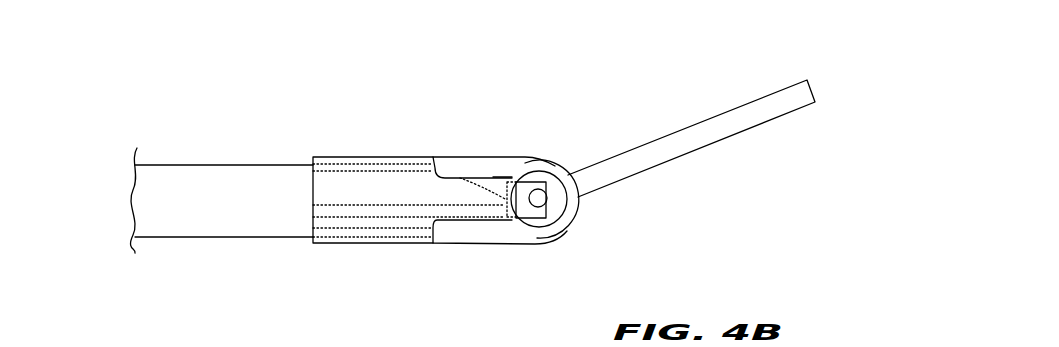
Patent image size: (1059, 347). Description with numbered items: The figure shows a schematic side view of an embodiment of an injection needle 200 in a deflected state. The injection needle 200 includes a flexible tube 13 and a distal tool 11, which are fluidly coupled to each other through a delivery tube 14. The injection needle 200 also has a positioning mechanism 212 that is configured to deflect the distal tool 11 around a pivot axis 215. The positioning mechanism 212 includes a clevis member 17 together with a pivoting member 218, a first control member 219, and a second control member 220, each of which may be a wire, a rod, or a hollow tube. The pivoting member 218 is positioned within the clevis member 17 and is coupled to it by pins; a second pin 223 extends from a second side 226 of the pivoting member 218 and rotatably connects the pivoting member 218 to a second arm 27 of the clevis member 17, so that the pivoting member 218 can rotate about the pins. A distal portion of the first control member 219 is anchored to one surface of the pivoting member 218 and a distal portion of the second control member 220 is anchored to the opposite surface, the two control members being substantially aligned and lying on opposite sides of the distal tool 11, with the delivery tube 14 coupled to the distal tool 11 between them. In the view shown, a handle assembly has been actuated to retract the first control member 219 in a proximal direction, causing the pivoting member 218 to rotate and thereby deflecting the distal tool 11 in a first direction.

The injection needle 200 is at (171, 107).
The flexible tube 13 is at (202, 238).
The clevis member 17 is at (372, 158).
The first control member 219 is at (443, 164).
The second control member 220 is at (471, 242).
The delivery tube 14 is at (499, 205).
The second arm 27 is at (493, 177).
The pivoting member 218 is at (536, 160).
The pivot axis 215 is at (545, 190).
The second pin 223 is at (552, 186).
The second side 226 is at (563, 232).
The positioning mechanism 212 is at (452, 75).
The distal tool 11 is at (745, 103).